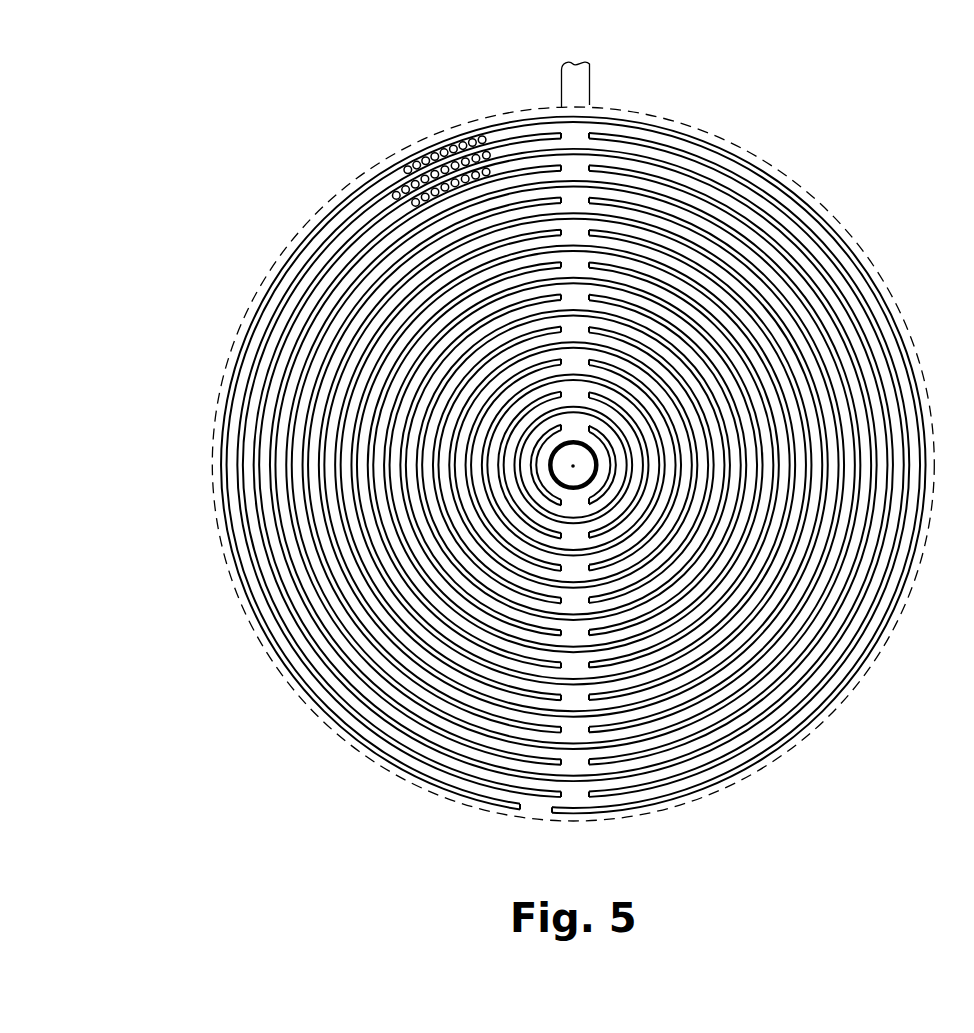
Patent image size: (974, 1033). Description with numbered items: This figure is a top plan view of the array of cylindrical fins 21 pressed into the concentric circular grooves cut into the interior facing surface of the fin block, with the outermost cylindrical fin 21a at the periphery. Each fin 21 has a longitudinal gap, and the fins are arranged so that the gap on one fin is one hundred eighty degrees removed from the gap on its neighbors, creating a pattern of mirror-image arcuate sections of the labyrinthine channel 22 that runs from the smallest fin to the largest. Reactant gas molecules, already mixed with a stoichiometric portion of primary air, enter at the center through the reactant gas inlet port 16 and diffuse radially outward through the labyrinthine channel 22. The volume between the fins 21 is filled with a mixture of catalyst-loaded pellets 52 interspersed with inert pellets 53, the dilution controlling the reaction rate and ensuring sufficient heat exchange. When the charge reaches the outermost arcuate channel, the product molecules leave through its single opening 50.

The reactant gas inlet port 16 is at (588, 466).
The cylindrical fins 21 is at (305, 292).
The outermost cylindrical fin 21a is at (820, 216).
The labyrinthine channel 22 is at (574, 296).
The single opening 50 is at (535, 811).
The catalyst-loaded pellets 52 is at (441, 143).
The inert pellets 53 is at (401, 168).